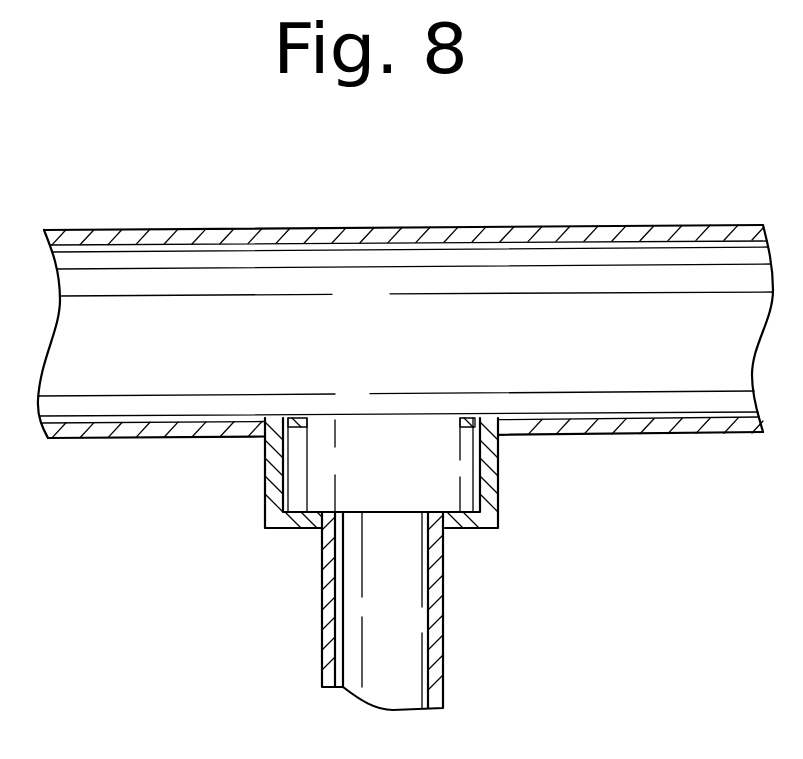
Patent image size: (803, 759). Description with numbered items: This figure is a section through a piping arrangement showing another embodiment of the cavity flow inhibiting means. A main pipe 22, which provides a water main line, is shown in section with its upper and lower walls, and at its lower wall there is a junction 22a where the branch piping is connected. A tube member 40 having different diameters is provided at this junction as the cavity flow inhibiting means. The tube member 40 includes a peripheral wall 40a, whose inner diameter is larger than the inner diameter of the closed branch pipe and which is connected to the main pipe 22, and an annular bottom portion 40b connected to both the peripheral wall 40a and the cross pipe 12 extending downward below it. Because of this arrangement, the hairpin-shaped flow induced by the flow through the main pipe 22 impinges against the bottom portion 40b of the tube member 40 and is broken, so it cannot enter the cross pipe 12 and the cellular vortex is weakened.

The main pipe 22 is at (618, 227).
The junction 22a is at (303, 422).
The tube member 40 is at (377, 516).
The peripheral wall 40a is at (261, 466).
The annular bottom portion 40b is at (290, 529).
The cross pipe 12 is at (322, 643).